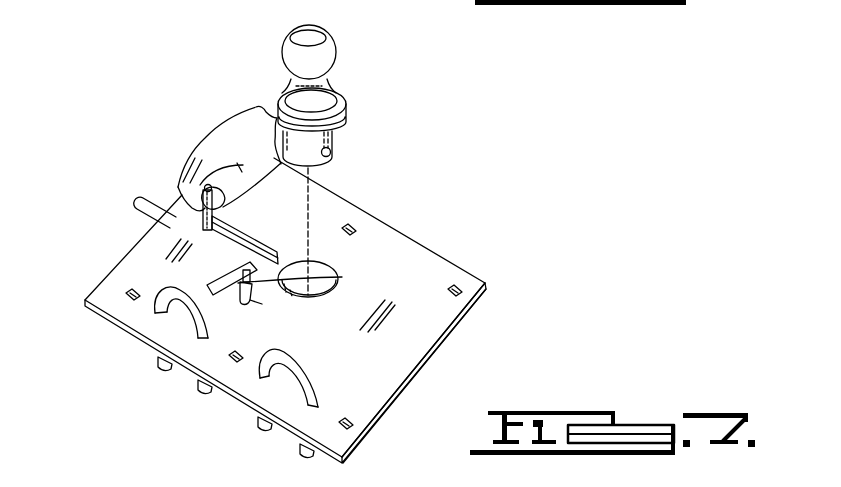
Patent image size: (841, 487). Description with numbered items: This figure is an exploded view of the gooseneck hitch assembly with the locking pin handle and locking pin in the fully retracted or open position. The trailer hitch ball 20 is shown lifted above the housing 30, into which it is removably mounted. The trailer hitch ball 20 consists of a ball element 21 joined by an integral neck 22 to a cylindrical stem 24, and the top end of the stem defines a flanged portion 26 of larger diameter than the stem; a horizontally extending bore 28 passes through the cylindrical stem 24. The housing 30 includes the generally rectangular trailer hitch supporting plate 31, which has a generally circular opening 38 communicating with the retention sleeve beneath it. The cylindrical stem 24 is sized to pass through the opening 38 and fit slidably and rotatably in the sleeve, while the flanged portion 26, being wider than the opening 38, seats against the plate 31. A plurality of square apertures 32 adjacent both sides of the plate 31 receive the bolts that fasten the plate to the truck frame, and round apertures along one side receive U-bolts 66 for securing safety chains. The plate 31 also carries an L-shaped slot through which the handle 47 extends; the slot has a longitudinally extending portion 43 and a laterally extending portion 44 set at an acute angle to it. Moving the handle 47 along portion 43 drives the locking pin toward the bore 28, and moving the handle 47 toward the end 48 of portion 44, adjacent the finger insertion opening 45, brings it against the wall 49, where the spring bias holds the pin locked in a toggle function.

The trailer hitch ball 20 is at (271, 77).
The ball element 21 is at (332, 50).
The neck 22 is at (323, 85).
The cylindrical stem 24 is at (333, 138).
The flanged portion 26 is at (338, 118).
The horizontally extending bore 28 is at (331, 153).
The housing 30 is at (220, 392).
The trailer hitch supporting plate 31 is at (408, 352).
The square apertures 32 is at (353, 223).
The generally circular opening 38 is at (318, 270).
The longitudinally extending portion 43 is at (240, 230).
The laterally extending portion 44 is at (342, 277).
The finger insertion opening 45 is at (255, 302).
The handle 47 is at (278, 262).
The end 48 is at (235, 293).
The wall 49 is at (228, 283).
The U-bolts 66 is at (160, 313).